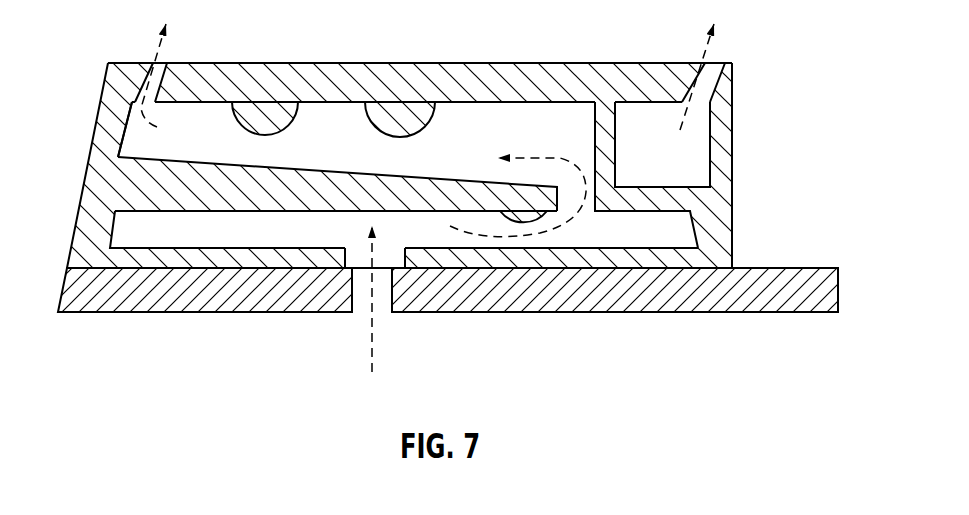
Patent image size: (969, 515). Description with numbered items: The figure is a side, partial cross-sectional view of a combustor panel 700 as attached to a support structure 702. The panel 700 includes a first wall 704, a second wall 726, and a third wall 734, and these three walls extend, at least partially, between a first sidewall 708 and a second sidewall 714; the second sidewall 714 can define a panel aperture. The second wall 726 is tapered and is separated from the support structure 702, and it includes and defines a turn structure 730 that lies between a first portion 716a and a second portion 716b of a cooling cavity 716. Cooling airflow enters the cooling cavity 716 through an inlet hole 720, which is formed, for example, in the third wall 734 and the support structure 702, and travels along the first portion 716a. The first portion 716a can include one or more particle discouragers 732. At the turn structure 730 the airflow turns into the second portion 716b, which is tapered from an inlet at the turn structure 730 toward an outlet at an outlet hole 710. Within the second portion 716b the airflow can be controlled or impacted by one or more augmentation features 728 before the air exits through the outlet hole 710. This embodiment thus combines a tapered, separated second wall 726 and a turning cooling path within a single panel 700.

The panel 700 is at (775, 33).
The support structure 702 is at (670, 297).
The first wall 704 is at (525, 75).
The first sidewall 708 is at (722, 204).
The outlet hole 710 is at (178, 47).
The second sidewall 714 is at (90, 197).
The cooling cavity 716 is at (146, 133).
The first portion 716a is at (345, 246).
The second portion 716b is at (522, 137).
The inlet hole 720 is at (383, 322).
The second wall 726 is at (153, 200).
The augmentation features 728 is at (262, 124).
The turn structure 730 is at (584, 220).
The particle discouragers 732 is at (522, 220).
The third wall 734 is at (170, 263).